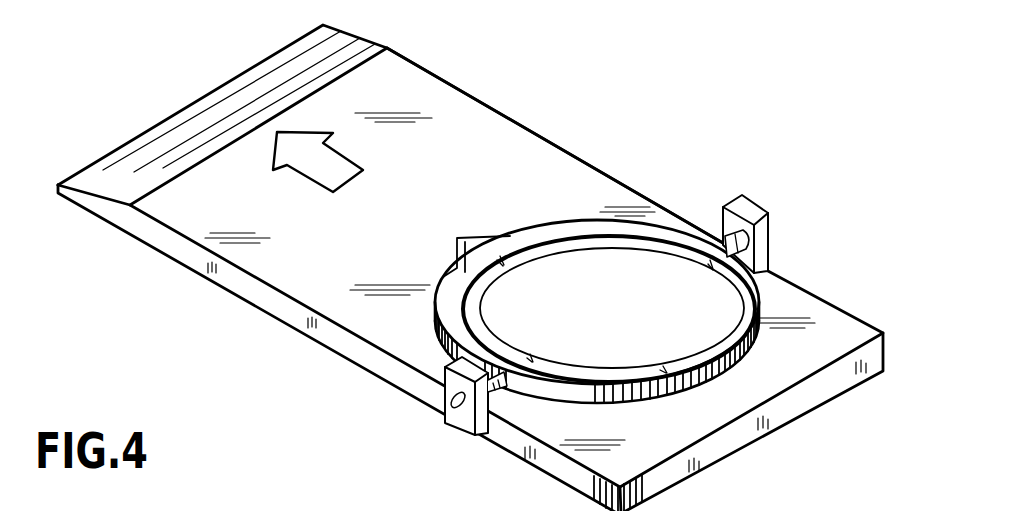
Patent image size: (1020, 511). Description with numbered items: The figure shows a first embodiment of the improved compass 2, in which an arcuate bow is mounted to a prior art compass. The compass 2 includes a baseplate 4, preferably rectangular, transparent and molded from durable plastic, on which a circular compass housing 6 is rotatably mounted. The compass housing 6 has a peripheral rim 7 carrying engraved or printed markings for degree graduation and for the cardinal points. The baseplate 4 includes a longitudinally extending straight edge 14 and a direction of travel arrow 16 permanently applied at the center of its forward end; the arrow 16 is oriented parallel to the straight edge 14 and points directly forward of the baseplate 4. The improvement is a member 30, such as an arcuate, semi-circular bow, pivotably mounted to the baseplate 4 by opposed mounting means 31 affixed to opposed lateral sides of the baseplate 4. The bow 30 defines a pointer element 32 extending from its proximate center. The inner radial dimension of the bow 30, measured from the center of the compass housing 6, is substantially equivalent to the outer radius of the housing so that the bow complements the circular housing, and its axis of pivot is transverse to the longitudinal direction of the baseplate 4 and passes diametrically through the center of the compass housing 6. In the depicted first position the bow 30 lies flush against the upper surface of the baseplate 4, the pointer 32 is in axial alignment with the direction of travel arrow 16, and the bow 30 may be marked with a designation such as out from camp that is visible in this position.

The compass 2 is at (150, 70).
The baseplate 4 is at (585, 177).
The straight edge 14 is at (527, 127).
The direction of travel arrow 16 is at (275, 146).
The bow 30 is at (577, 315).
The compass housing 6 is at (620, 321).
The peripheral rim 7 is at (658, 368).
The pointer element 32 is at (457, 240).
The mounting means 31 is at (770, 233).